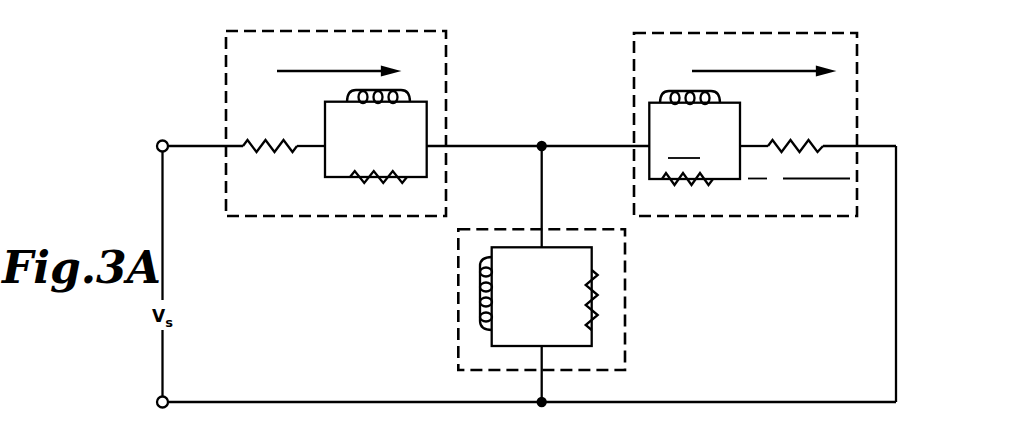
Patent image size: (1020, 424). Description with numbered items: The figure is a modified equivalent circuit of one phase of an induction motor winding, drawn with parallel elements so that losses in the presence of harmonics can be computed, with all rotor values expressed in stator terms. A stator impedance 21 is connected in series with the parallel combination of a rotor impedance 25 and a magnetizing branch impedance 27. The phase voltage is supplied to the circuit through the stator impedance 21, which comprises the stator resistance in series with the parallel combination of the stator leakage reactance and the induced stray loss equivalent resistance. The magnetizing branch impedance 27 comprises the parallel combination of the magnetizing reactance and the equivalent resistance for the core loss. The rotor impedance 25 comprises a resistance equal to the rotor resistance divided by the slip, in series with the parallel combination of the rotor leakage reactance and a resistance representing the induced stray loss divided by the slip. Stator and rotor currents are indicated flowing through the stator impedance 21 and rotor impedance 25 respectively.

The stator impedance 21 is at (226, 46).
The rotor impedance 25 is at (638, 52).
The magnetizing branch impedance 27 is at (460, 307).